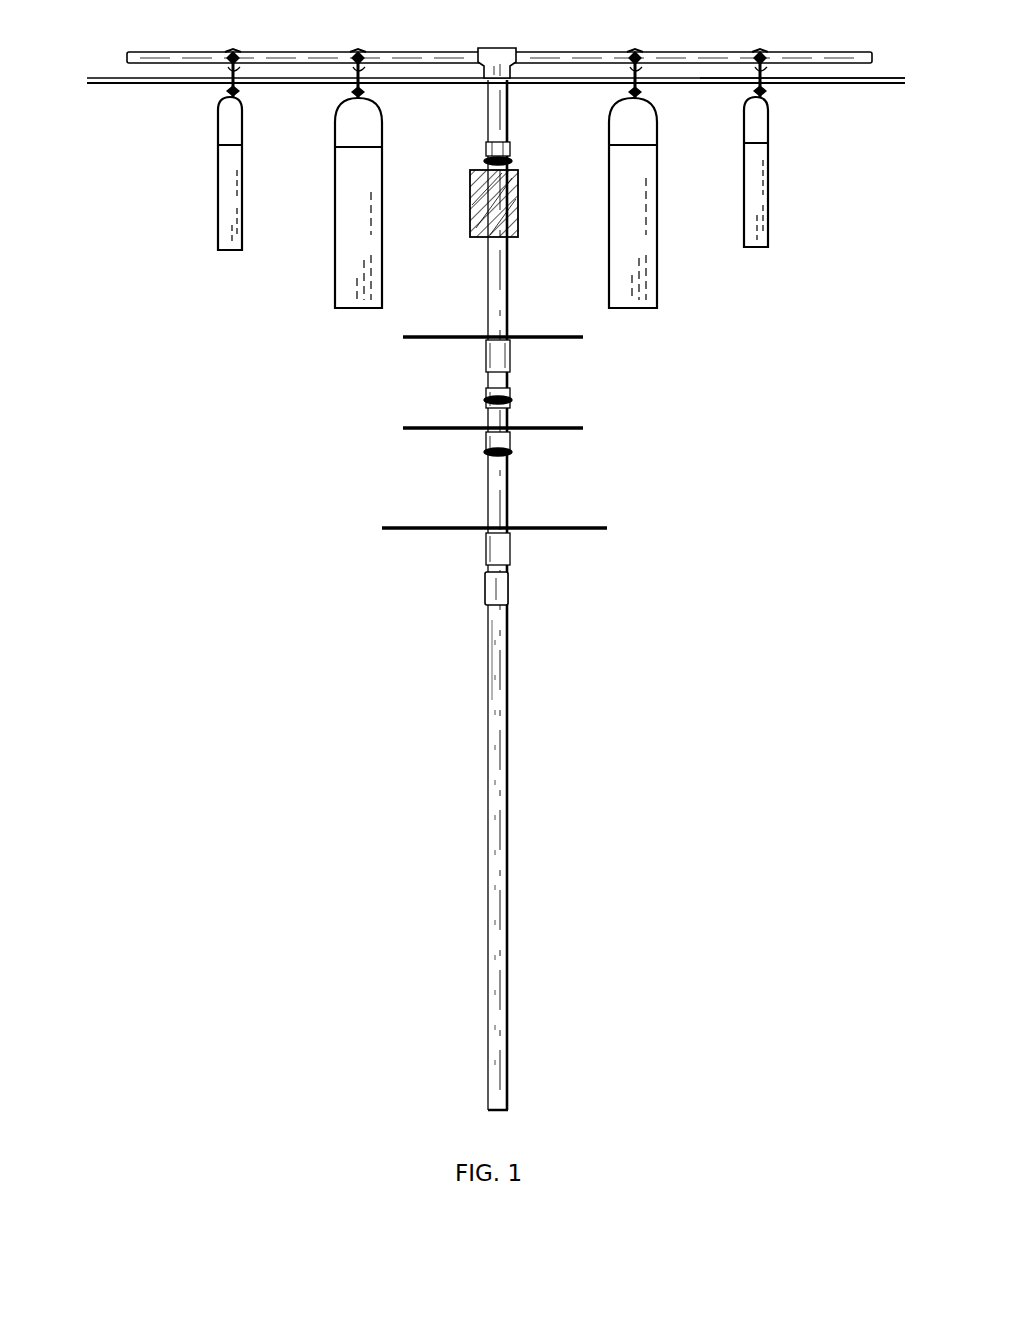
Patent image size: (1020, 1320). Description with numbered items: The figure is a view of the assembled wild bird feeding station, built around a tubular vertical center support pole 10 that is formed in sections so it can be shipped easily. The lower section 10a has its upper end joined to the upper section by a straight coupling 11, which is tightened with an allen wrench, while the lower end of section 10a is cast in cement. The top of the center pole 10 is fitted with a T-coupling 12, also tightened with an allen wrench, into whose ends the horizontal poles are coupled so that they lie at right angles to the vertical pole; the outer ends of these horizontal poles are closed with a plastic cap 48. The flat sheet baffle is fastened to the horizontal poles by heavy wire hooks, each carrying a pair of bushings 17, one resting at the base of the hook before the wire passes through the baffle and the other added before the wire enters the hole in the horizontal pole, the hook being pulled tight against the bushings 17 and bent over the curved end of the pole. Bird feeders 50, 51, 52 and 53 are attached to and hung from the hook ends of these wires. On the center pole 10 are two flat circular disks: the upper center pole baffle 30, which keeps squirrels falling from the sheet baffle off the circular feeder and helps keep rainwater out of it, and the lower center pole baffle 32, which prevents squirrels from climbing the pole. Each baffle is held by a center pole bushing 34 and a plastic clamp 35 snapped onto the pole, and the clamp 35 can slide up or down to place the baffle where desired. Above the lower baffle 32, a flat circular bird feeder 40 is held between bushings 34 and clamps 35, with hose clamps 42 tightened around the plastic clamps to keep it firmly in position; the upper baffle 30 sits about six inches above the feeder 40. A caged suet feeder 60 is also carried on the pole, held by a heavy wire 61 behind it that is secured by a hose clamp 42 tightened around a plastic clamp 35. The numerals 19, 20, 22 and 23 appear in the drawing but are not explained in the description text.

The vertical center support pole 10 is at (506, 864).
The lower pole section 10a is at (512, 668).
The straight coupling 11 is at (508, 578).
The T-coupling 12 is at (487, 46).
The bushing 17 is at (236, 64).
The hook attachment 19 is at (236, 54).
The connection 20 is at (432, 84).
The left rod section 22 is at (148, 84).
The right rod section 23 is at (852, 83).
The upper center pole baffle 30 is at (583, 338).
The lower center pole baffle 32 is at (607, 528).
The center pole bushing 34 is at (486, 357).
The plastic clamp 35 is at (511, 130).
The flat circular bird feeder 40 is at (583, 428).
The hose clamp 42 is at (484, 161).
The plastic cap 48 is at (128, 52).
The bird feeder 50 is at (240, 204).
The bird feeder 51 is at (371, 240).
The bird feeder 52 is at (654, 237).
The bird feeder 53 is at (773, 194).
The suet feeder 60 is at (518, 200).
The heavy wire 61 is at (510, 146).